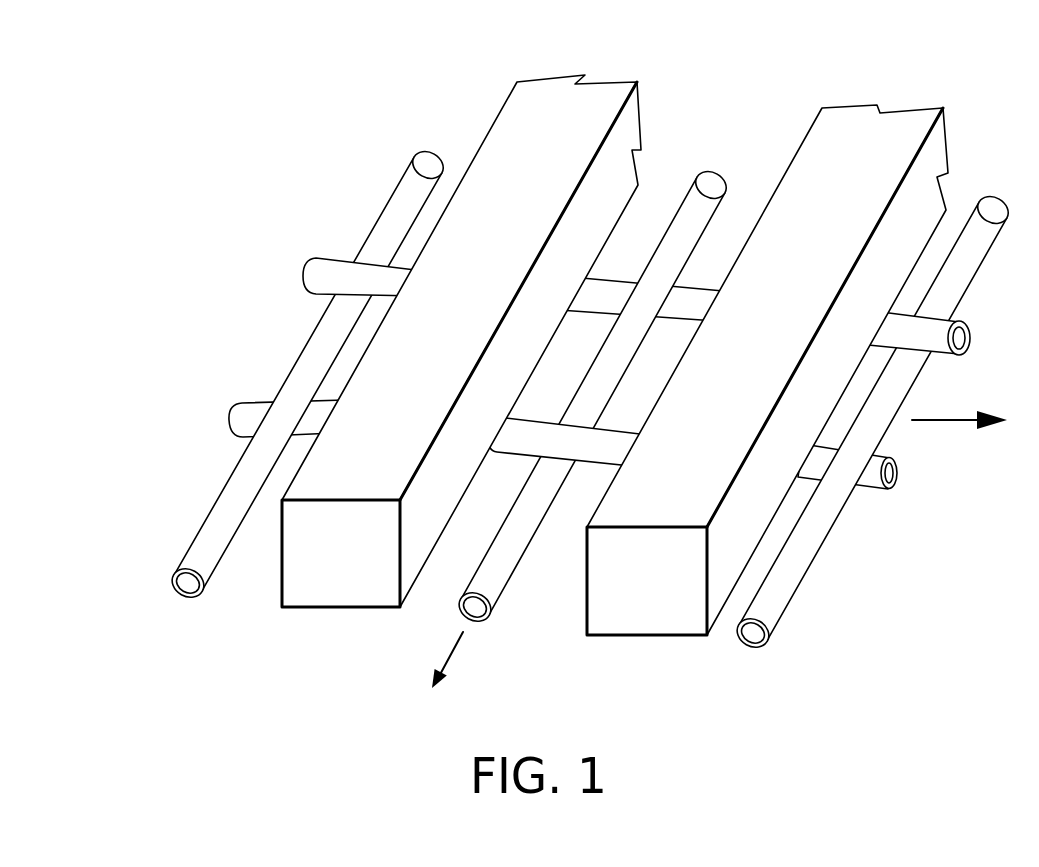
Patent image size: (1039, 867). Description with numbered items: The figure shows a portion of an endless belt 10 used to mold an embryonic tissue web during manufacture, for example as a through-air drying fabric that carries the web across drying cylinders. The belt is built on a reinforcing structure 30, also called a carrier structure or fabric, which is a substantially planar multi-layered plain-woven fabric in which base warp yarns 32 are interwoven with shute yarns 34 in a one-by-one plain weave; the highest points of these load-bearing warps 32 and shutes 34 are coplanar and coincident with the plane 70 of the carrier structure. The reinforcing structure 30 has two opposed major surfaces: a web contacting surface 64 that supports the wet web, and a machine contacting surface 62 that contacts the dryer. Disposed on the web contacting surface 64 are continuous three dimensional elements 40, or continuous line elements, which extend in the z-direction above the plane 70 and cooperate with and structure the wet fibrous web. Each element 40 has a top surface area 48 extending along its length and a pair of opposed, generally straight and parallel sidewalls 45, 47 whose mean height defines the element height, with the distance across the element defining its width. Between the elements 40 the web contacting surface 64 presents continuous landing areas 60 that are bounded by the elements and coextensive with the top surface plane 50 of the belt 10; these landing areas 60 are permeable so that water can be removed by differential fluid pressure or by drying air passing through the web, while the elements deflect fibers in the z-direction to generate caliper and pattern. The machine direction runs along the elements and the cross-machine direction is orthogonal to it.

The endless belt 10 is at (571, 369).
The reinforcing structure 30 is at (295, 391).
The base warp yarns 32 is at (754, 642).
The shute yarns 34 is at (897, 482).
The continuous three dimensional element 40 is at (615, 346).
The sidewall 45 is at (586, 583).
The sidewall 47 is at (846, 368).
The top surface area 48 is at (747, 386).
The top surface plane 50 is at (572, 397).
The landing areas 60 is at (658, 205).
The machine contacting surface 62 is at (230, 612).
The web contacting surface 64 is at (366, 153).
The plane of the carrier structure 70 is at (224, 412).